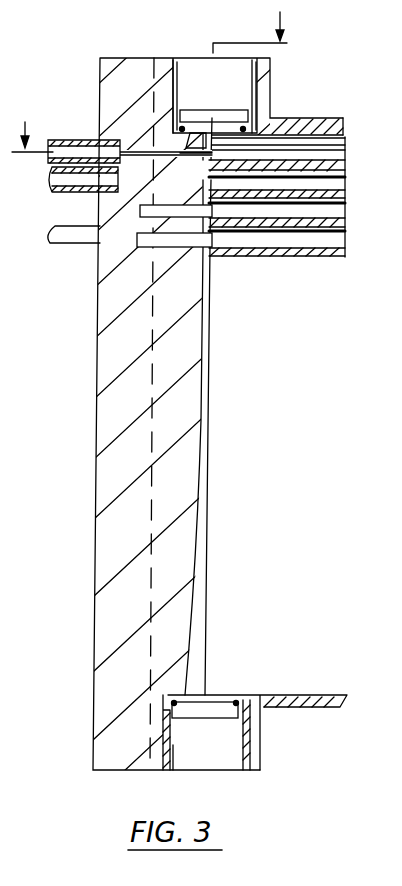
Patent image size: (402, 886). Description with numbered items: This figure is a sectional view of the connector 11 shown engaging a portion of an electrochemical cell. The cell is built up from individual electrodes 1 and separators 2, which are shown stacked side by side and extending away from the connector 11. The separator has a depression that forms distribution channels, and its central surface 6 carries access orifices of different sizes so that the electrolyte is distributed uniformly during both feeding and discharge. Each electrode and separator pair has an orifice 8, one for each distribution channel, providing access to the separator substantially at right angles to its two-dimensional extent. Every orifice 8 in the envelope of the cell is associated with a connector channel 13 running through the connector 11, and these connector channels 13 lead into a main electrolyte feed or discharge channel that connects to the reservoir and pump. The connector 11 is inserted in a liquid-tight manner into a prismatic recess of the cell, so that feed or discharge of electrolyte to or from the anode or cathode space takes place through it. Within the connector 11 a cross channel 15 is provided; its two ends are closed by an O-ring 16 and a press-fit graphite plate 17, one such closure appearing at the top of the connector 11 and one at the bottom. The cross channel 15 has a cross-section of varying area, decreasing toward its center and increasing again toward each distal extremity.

The electrode 1 is at (347, 175).
The separator 2 is at (338, 222).
The central surface 6 is at (149, 81).
The orifice 8 is at (298, 157).
The connector 11 is at (103, 701).
The connector channel 13 is at (147, 178).
The cross channel 15 is at (203, 507).
The O-ring 16 is at (253, 132).
The graphite plate 17 is at (210, 112).